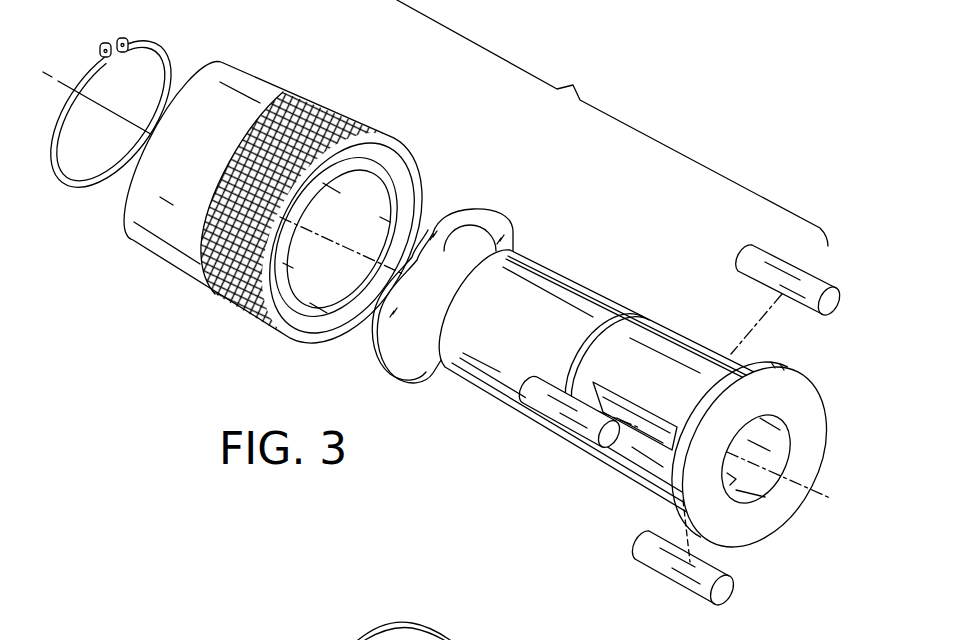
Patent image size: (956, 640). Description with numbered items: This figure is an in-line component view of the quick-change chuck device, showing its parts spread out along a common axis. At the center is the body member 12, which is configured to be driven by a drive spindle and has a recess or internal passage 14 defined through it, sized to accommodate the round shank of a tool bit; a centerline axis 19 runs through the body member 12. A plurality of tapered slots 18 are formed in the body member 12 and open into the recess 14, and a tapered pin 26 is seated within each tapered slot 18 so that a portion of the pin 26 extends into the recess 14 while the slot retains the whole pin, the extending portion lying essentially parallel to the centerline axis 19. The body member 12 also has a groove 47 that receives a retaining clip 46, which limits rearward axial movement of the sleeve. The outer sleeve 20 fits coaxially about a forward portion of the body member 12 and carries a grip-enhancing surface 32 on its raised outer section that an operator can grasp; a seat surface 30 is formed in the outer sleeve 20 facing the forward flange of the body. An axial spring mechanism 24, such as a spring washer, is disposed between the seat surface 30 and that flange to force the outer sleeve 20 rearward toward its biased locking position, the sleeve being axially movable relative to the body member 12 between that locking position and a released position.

The body member 12 is at (559, 303).
The recess or internal passage 14 is at (784, 441).
The tapered slots 18 is at (620, 401).
The centerline axis 19 is at (833, 480).
The outer sleeve 20 is at (258, 73).
The axial spring mechanism 24 is at (498, 221).
The tapered pin 26 is at (816, 271).
The seat surface 30 is at (368, 176).
The grip-enhancing surface 32 is at (236, 311).
The retaining clip 46 is at (145, 46).
The groove 47 is at (617, 311).